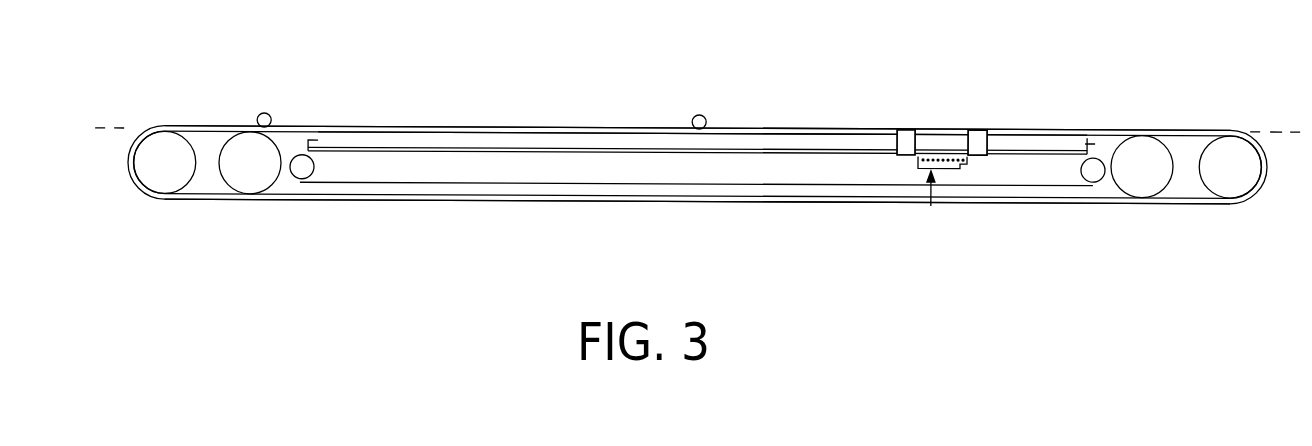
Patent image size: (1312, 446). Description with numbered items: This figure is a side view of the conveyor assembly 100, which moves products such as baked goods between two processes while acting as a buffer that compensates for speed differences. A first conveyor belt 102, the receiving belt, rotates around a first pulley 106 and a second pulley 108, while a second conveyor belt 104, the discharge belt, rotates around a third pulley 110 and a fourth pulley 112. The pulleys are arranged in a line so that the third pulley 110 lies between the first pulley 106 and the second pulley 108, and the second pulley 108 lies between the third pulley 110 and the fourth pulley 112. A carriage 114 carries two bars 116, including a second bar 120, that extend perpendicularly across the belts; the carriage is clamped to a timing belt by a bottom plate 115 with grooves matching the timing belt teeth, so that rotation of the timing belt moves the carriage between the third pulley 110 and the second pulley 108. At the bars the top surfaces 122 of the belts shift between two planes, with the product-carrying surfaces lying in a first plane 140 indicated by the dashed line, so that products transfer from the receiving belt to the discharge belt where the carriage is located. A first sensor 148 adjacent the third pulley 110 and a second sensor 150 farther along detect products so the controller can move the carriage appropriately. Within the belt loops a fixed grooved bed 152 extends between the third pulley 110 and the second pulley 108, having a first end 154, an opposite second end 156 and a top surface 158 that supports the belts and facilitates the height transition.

The conveyor assembly 100 is at (890, 30).
The first conveyor belt 102 is at (205, 130).
The second conveyor belt 104 is at (1192, 200).
The first pulley 106 is at (168, 165).
The second pulley 108 is at (1142, 170).
The third pulley 110 is at (250, 167).
The fourth pulley 112 is at (1230, 168).
The carriage 114 is at (931, 205).
The bottom plate 115 is at (962, 165).
The bars 116 is at (912, 129).
The second bar 120 is at (905, 129).
The top surface 122 is at (673, 129).
The first plane 140 is at (121, 130).
The first sensor 148 is at (268, 116).
The second sensor 150 is at (699, 115).
The grooved bed 152 is at (487, 143).
The first end 154 is at (308, 142).
The second end 156 is at (1093, 140).
The top surface 158 is at (397, 136).